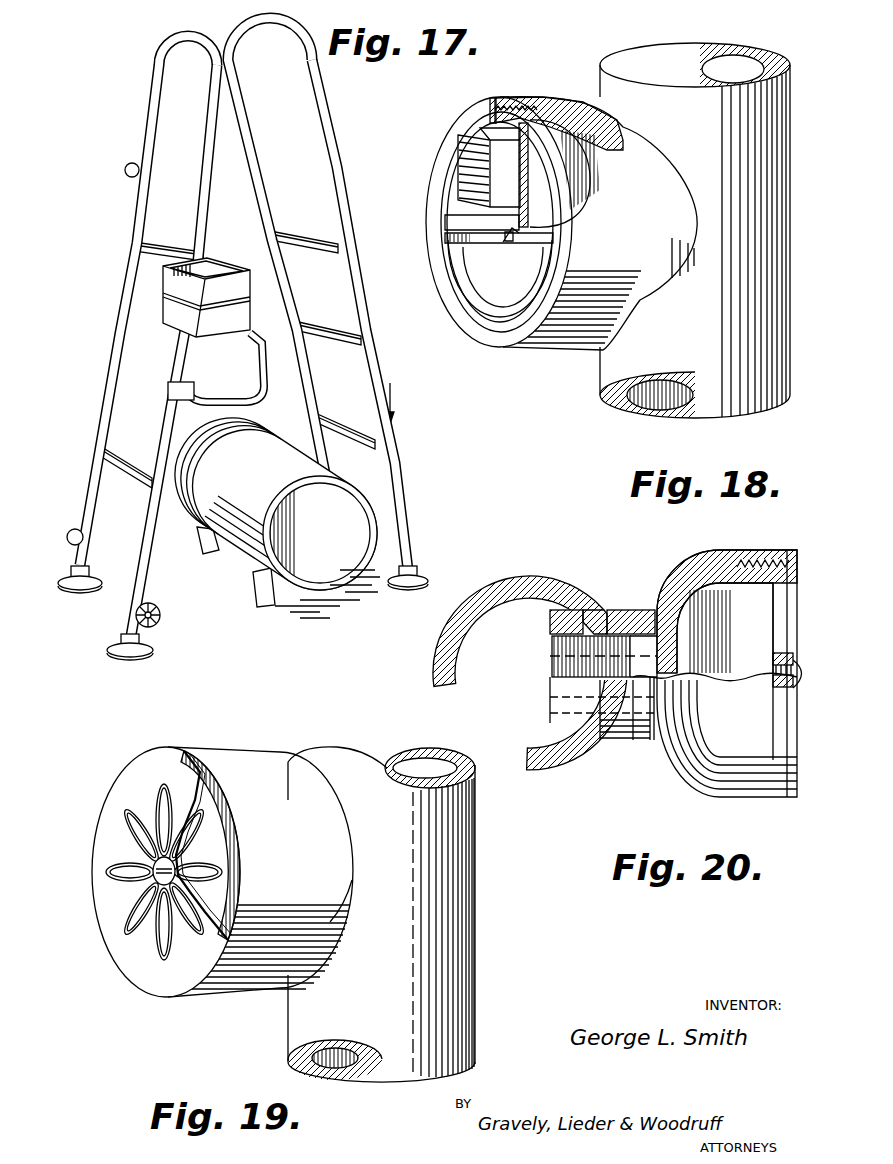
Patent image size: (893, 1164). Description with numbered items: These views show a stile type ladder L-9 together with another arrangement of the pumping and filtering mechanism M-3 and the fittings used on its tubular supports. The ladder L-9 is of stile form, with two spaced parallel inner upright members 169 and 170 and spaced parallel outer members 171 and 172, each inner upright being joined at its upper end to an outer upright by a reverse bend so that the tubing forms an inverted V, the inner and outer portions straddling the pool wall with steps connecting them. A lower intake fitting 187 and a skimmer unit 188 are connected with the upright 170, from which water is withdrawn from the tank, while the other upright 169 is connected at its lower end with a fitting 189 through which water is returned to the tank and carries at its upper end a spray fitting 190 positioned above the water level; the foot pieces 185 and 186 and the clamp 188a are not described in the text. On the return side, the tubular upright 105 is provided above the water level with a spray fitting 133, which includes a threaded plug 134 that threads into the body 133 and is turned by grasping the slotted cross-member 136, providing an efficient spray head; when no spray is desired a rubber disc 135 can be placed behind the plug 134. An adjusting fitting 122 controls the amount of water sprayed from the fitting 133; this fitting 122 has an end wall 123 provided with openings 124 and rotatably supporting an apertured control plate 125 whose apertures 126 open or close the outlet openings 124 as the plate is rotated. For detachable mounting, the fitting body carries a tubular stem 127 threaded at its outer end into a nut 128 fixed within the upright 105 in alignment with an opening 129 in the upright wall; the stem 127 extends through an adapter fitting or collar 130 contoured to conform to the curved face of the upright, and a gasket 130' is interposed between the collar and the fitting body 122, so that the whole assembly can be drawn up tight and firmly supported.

In FIG. 17, the stile type ladder L-9 is at (146, 118).
In FIG. 17, the pumping and filtering mechanism M-3 is at (255, 569).
In FIG. 17, the inner upright member 169 is at (107, 413).
In FIG. 17, the inner upright member 170 is at (150, 531).
In FIG. 17, the outer upright member 171 is at (402, 467).
In FIG. 17, the outer upright member 172 is at (304, 392).
In FIG. 17, the foot 185 is at (154, 652).
In FIG. 17, the foot 186 is at (424, 572).
In FIG. 17, the lower intake fitting 187 is at (161, 615).
In FIG. 17, the skimmer unit 188 is at (236, 250).
In FIG. 17, the clamp 188a is at (186, 382).
In FIG. 17, the return fitting 189 is at (72, 530).
In FIG. 17, the spray fitting 190 is at (124, 168).
In FIG. 18, the tubular upright 105 is at (610, 370).
In FIG. 19, the tubular upright 105 is at (358, 739).
In FIG. 20, the tubular upright 105 is at (437, 650).
In FIG. 19, the adjustable return feed fitting 122 is at (209, 999).
In FIG. 20, the adjustable return feed fitting 122 is at (706, 549).
In FIG. 19, the end wall 123 is at (218, 818).
In FIG. 19, the outlet openings 124 is at (210, 864).
In FIG. 20, the outlet openings 124 is at (782, 629).
In FIG. 19, the control plate 125 is at (100, 893).
In FIG. 20, the control plate 125 is at (790, 800).
In FIG. 19, the apertures 126 is at (122, 806).
In FIG. 20, the apertures 126 is at (803, 590).
In FIG. 20, the tubular stem 127 is at (549, 662).
In FIG. 20, the nut 128 is at (549, 723).
In FIG. 20, the opening 129 is at (590, 630).
In FIG. 20, the adapter fitting or collar 130 is at (614, 727).
In FIG. 20, the gasket 130' is at (636, 726).
In FIG. 18, the spray fitting 133 is at (544, 88).
In FIG. 18, the threaded plug 134 is at (467, 140).
In FIG. 18, the rubber disc 135 is at (570, 200).
In FIG. 18, the cross-member 136 is at (508, 234).